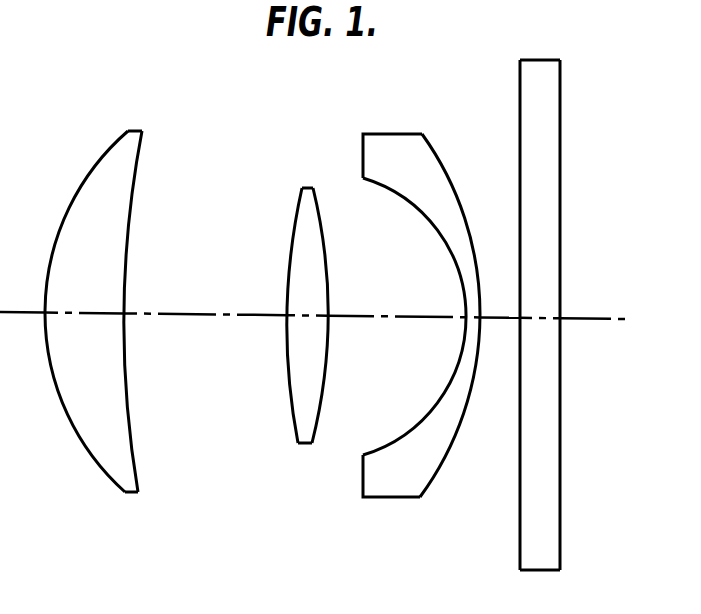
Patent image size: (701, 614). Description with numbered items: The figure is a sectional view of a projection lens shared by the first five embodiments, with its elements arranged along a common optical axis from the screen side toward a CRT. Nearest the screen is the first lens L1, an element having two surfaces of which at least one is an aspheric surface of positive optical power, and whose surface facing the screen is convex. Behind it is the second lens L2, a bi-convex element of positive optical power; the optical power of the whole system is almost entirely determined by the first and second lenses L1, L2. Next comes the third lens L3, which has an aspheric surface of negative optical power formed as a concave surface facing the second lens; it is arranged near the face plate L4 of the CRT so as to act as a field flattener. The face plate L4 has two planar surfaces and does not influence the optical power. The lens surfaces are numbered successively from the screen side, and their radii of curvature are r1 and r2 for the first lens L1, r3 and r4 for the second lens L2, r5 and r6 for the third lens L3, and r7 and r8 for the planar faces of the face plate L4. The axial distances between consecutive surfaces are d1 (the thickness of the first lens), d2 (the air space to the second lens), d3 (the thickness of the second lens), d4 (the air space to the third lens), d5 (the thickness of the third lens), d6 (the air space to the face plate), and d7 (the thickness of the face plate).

The first lens L1 is at (117, 306).
The second lens L2 is at (299, 298).
The third lens L3 is at (419, 314).
The face plate L4 is at (540, 325).
The radius of curvature of first lens surface r1 is at (92, 467).
The radius of curvature of second lens surface r2 is at (137, 475).
The radius of curvature of third lens surface r3 is at (288, 407).
The radius of curvature of fourth lens surface r4 is at (322, 410).
The radius of curvature of fifth lens surface r5 is at (398, 440).
The radius of curvature of sixth lens surface r6 is at (437, 490).
The radius of curvature of seventh lens surface r7 is at (516, 552).
The radius of curvature of eighth lens surface r8 is at (561, 545).
The axial distance between first and second surfaces d1 is at (71, 313).
The axial distance between second and third surfaces d2 is at (203, 313).
The axial distance between third and fourth surfaces d3 is at (294, 315).
The axial distance between fourth and fifth surfaces d4 is at (350, 316).
The axial distance between fifth and sixth surfaces d5 is at (464, 316).
The axial distance between sixth and seventh surfaces d6 is at (494, 318).
The axial distance between seventh and eighth surfaces d7 is at (530, 318).